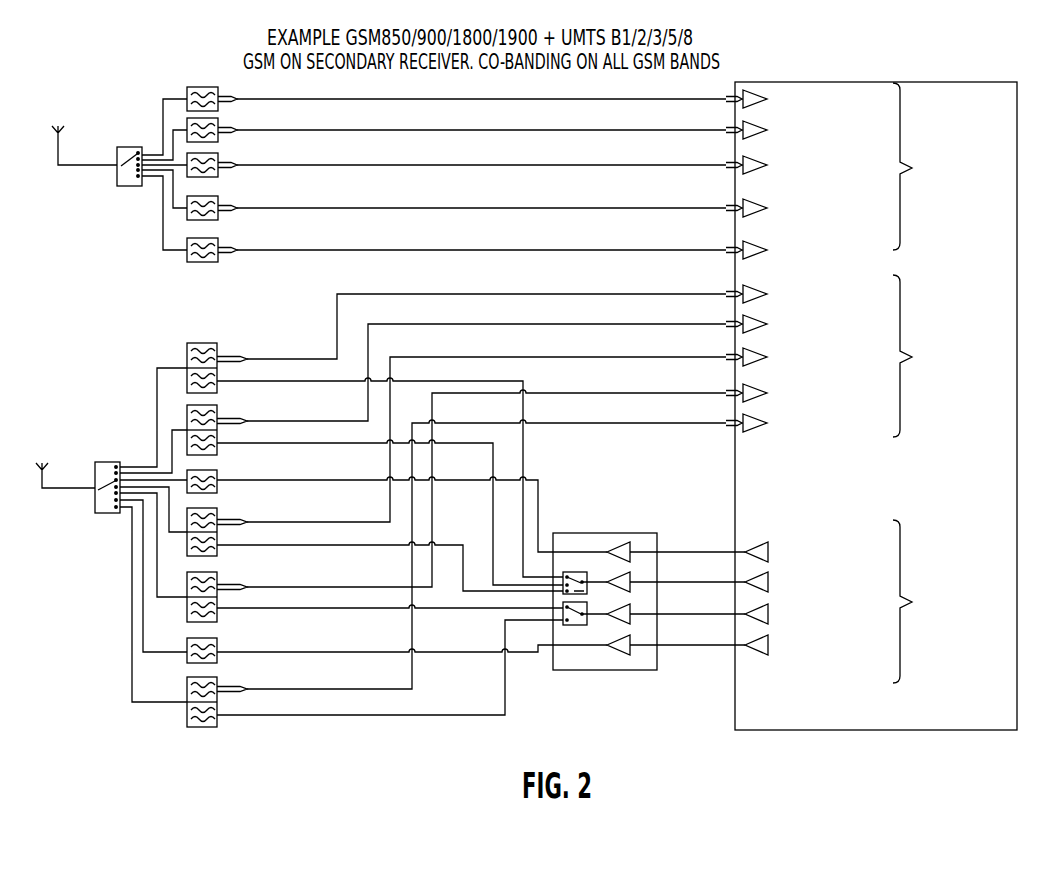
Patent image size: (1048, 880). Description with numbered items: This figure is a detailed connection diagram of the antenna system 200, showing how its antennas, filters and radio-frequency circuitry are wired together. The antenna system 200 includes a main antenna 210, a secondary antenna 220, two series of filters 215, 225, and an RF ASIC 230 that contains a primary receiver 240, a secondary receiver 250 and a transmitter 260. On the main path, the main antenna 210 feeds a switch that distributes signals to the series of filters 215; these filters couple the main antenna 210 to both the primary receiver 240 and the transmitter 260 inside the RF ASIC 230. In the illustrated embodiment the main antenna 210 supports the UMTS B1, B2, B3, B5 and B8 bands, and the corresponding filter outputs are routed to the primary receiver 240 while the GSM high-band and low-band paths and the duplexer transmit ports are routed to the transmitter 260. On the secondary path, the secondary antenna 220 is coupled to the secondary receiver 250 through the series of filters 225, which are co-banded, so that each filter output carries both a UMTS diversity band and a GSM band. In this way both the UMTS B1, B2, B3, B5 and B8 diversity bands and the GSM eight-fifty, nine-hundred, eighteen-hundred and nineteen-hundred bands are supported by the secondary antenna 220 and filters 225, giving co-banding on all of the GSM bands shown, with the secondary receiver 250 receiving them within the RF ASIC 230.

The antenna system 200 is at (583, 743).
The main antenna 210 is at (56, 460).
The series of filters 215 is at (200, 326).
The secondary antenna 220 is at (72, 125).
The series of filters 225 is at (198, 84).
The RF ASIC 230 is at (876, 755).
The primary receiver 240 is at (965, 405).
The secondary receiver 250 is at (965, 206).
The transmitter 260 is at (977, 638).